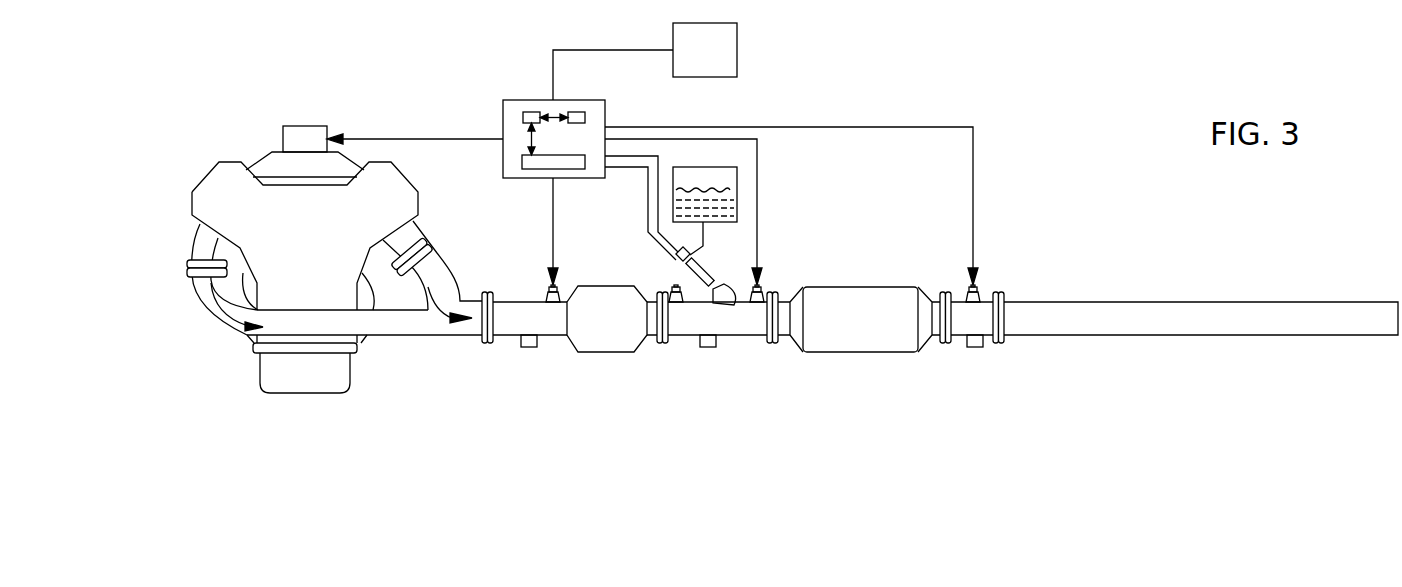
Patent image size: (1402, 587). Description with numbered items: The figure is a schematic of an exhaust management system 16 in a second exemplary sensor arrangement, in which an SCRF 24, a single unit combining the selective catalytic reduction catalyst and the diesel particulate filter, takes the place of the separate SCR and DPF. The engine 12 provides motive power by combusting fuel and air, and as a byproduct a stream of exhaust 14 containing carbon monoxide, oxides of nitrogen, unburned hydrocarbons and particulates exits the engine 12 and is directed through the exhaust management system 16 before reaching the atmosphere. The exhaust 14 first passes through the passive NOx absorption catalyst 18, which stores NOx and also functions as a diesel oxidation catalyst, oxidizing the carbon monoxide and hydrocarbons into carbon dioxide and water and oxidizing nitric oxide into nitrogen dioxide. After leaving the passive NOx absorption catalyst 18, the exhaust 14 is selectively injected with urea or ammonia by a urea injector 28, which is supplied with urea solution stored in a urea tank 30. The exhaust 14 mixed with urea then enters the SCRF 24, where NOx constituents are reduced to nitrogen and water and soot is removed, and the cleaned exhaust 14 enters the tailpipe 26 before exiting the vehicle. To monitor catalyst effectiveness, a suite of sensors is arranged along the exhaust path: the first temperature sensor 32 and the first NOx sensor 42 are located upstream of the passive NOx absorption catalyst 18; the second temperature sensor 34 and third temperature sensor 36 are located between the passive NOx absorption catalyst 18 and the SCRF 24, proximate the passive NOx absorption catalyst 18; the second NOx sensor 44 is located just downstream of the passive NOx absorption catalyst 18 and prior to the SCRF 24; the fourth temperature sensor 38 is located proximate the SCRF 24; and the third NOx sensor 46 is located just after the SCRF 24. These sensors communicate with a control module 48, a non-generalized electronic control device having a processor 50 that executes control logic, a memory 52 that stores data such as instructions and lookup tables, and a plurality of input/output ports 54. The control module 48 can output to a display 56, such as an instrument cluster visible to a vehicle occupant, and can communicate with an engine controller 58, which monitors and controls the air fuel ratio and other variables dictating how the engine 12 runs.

The engine 12 is at (206, 177).
The stream of exhaust 14 is at (442, 288).
The exhaust management system 16 is at (1008, 93).
The passive NOx absorption catalyst 18 is at (603, 353).
The SCRF 24 is at (858, 355).
The tailpipe 26 is at (1202, 302).
The urea injector 28 is at (712, 286).
The urea tank 30 is at (737, 185).
The first temperature sensor 32 is at (548, 292).
The second temperature sensor 34 is at (671, 286).
The third temperature sensor 36 is at (762, 288).
The fourth temperature sensor 38 is at (982, 290).
The first NOx sensor 42 is at (528, 348).
The second NOx sensor 44 is at (708, 348).
The third NOx sensor 46 is at (973, 348).
The control module 48 is at (503, 112).
The processor 50 is at (533, 112).
The memory 52 is at (578, 112).
The input/output ports 54 is at (530, 169).
The display 56 is at (737, 50).
The engine controller 58 is at (302, 126).